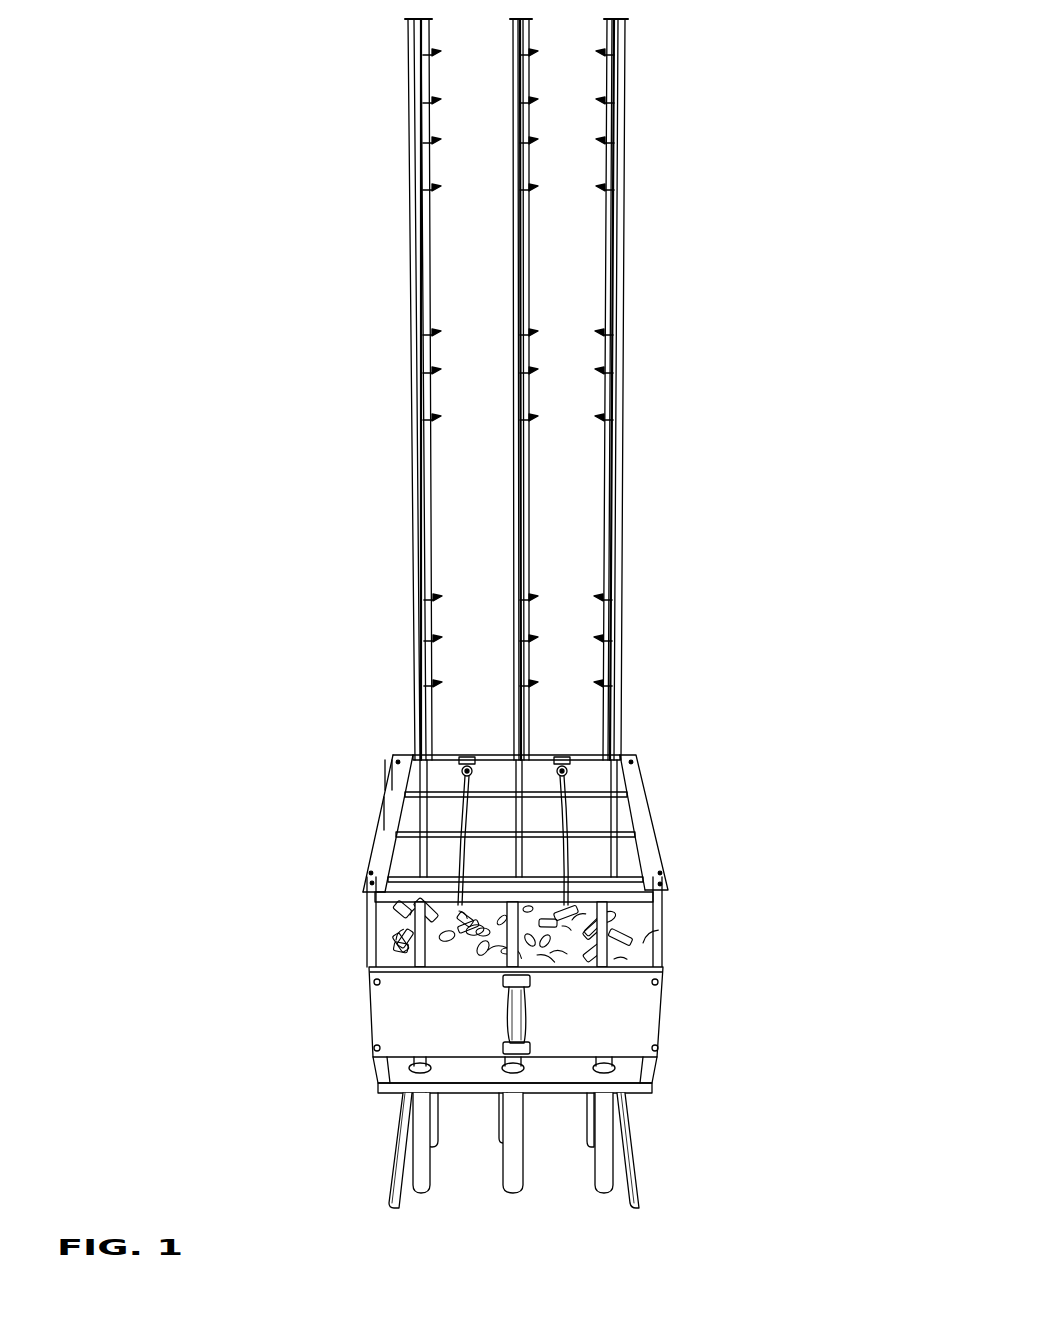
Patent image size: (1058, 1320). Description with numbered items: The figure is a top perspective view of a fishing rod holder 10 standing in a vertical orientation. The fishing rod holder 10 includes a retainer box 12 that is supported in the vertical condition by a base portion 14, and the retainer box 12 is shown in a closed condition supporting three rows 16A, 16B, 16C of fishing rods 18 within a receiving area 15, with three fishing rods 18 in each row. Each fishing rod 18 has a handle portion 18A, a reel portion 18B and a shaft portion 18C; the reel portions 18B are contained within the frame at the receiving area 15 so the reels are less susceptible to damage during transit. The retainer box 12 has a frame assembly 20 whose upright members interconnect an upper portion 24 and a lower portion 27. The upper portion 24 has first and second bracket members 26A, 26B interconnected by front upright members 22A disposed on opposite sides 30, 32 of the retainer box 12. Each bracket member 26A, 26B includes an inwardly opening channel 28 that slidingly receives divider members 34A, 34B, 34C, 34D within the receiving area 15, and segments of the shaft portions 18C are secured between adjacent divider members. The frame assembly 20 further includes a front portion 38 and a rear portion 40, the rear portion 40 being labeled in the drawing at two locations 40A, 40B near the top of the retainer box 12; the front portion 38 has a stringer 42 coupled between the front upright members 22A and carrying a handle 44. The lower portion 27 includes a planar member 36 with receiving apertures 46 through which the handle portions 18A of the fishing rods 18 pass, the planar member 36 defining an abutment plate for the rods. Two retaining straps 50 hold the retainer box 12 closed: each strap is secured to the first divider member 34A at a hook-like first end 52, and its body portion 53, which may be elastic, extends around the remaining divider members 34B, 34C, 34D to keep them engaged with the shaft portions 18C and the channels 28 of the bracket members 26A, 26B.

The fishing rod holder 10 is at (740, 862).
The retainer box 12 is at (322, 942).
The base portion 14 is at (345, 1133).
The receiving area 15 is at (365, 940).
The row of fishing rods 16A is at (355, 867).
The row of fishing rods 16B is at (371, 825).
The row of fishing rods 16C is at (385, 777).
The fishing rod 18 is at (650, 440).
The handle portion 18A is at (613, 1175).
The reel portion 18B is at (650, 940).
The shaft portion 18C is at (622, 612).
The frame assembly 20 is at (688, 970).
The front upright member 22A is at (368, 947).
The upper portion 24 is at (658, 807).
The first bracket member 26A is at (378, 858).
The second bracket member 26B is at (645, 855).
The lower portion 27 is at (658, 1107).
The channel 28 is at (370, 905).
The side of retainer box 30 is at (355, 1054).
The side of retainer box 32 is at (668, 1072).
The first divider member 34A is at (593, 815).
The divider member 34B is at (605, 840).
The divider member 34C is at (598, 860).
The divider member 34D is at (623, 888).
The planar member 36 is at (475, 1110).
The front portion 38 is at (390, 1020).
The rear portion 40 is at (562, 748).
The rod clamp 40A is at (567, 807).
The rod clamp 40B is at (587, 775).
The stringer 42 is at (395, 1070).
The handle 44 is at (500, 1022).
The receiving aperture 46 is at (593, 1067).
The retaining strap 50 is at (463, 805).
The first end 52 is at (458, 755).
The body portion 53 is at (465, 870).